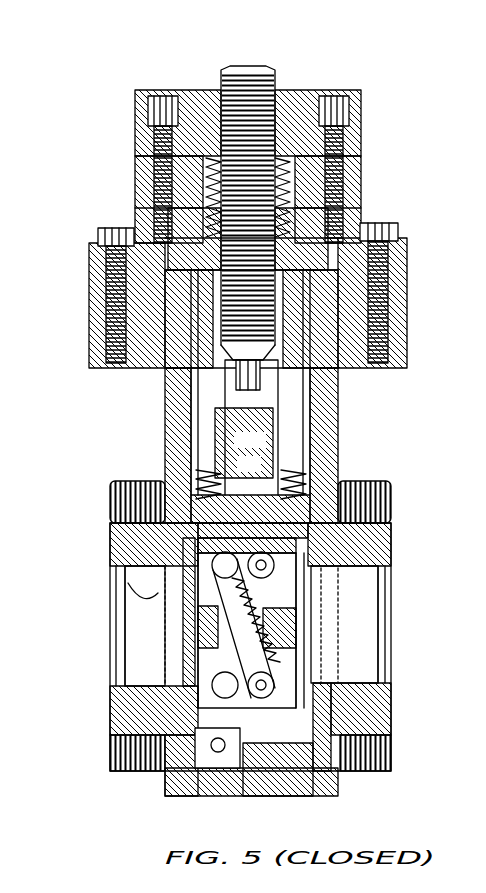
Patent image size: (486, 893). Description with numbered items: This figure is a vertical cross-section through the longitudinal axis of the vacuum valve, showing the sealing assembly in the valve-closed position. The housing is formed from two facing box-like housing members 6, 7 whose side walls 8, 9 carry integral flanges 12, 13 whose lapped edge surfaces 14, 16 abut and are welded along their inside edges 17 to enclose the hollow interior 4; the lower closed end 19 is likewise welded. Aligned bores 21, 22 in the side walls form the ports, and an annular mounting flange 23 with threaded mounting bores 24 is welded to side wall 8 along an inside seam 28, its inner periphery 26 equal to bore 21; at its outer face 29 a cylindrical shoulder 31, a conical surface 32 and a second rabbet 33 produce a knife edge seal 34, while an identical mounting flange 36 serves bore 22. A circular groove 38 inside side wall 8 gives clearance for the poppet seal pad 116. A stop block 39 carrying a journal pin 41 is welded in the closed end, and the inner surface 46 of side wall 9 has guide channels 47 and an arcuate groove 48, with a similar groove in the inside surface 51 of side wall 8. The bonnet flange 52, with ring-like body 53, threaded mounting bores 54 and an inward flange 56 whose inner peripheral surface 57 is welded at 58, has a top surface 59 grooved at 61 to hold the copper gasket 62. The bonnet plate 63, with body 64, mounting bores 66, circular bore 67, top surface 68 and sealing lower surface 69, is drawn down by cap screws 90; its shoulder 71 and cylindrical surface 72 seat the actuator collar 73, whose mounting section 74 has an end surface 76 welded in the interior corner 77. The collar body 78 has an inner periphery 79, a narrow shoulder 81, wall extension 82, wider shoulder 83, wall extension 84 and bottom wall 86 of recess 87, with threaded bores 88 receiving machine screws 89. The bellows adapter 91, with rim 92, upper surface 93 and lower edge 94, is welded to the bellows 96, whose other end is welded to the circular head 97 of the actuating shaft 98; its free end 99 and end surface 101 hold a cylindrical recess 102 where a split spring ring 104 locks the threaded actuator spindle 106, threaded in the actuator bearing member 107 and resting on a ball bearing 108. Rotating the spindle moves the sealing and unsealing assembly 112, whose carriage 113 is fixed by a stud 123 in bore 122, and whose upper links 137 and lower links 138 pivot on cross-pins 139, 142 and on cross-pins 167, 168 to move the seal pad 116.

The hollow interior 4 is at (345, 778).
The housing member 6 is at (157, 416).
The housing member 7 is at (332, 424).
The side wall 8 is at (183, 430).
The side wall 9 is at (320, 441).
The integral flange 12 is at (202, 788).
The integral flange 13 is at (318, 790).
The edge surface 14 is at (226, 788).
The edge surface 16 is at (240, 790).
The inside edges 17 is at (290, 790).
The closed end 19 is at (170, 793).
The bore 21 is at (120, 574).
The bore 22 is at (335, 578).
The annular mounting flange 23 is at (102, 712).
The threaded mounting bores 24 is at (102, 740).
The inner periphery 26 is at (125, 592).
The inside seam 28 is at (166, 623).
The outer face 29 is at (102, 530).
The cylindrical shoulder 31 is at (110, 684).
The conical surface 32 is at (105, 676).
The second rabbet 33 is at (120, 640).
The knife edge seal 34 is at (108, 558).
The mounting flange 36 is at (384, 698).
The circular groove 38 is at (102, 520).
The stop block 39 is at (172, 773).
The journal pin 41 is at (207, 742).
The inner surface 46 is at (292, 370).
The guide channels 47 is at (290, 388).
The groove 48 is at (170, 334).
The inside surface 51 is at (160, 395).
The bonnet flange 52 is at (81, 346).
The annular ring-like body 53 is at (80, 362).
The threaded mounting bores 54 is at (81, 320).
The radially inwardly projecting flange 56 is at (330, 304).
The inner peripheral surface 57 is at (168, 290).
The weld 58 is at (172, 310).
The top surface 59 is at (387, 286).
The groove 61 is at (385, 298).
The annular gasket 62 is at (398, 254).
The bonnet plate 63 is at (81, 266).
The body 64 is at (81, 254).
The mounting bores 66 is at (397, 240).
The circular bore 67 is at (320, 284).
The top surface 68 is at (95, 226).
The lower surface 69 is at (81, 298).
The annular shoulder 71 is at (388, 230).
The cylindrical surface 72 is at (380, 218).
The actuator collar 73 is at (382, 118).
The cylindrical mounting section 74 is at (206, 212).
The end surface 76 is at (310, 262).
The interior corner 77 is at (170, 242).
The cylindrical body 78 is at (127, 172).
The inner cylindrical periphery 79 is at (127, 197).
The narrow annular shoulder 81 is at (340, 110).
The cylindrical wall extension 82 is at (142, 122).
The wider annular shoulder 83 is at (345, 125).
The cylindrical wall extension 84 is at (135, 156).
The bottom wall 86 is at (345, 145).
The recess 87 is at (135, 105).
The threaded mounting bores 88 is at (340, 172).
The machine screw 89 is at (153, 88).
The cap screws 90 is at (81, 244).
The bellows adapter 91 is at (312, 100).
The outer cylindrical peripheral rim portion 92 is at (355, 160).
The upper surface 93 is at (220, 82).
The lower peripheral edge 94 is at (143, 169).
The bellows 96 is at (165, 448).
The circular head 97 is at (102, 524).
The bellows actuating shaft 98 is at (251, 476).
The free end 99 is at (268, 354).
The end surface 101 is at (172, 368).
The cylindrical recess 102 is at (248, 367).
The split spring ring 104 is at (312, 403).
The threaded actuator spindle 106 is at (280, 100).
The actuator bearing member 107 is at (175, 82).
The ball bearing 108 is at (244, 443).
The vacuum valve sealing and unsealing assembly 112 is at (340, 620).
The rollable carriage 113 is at (278, 754).
The poppet seal pad 116 is at (157, 612).
The bore 122 is at (325, 476).
The stud 123 is at (252, 616).
The upper links 137 is at (285, 621).
The lower links 138 is at (266, 707).
The cross-pin 139 is at (270, 619).
The cross-pin 142 is at (384, 725).
The cross-pin 167 is at (243, 625).
The cross-pin 168 is at (243, 685).